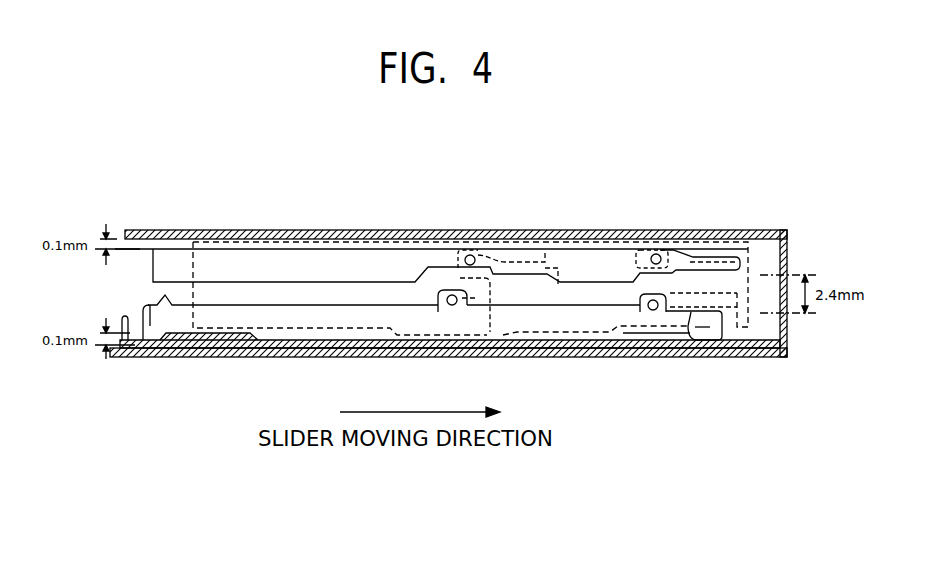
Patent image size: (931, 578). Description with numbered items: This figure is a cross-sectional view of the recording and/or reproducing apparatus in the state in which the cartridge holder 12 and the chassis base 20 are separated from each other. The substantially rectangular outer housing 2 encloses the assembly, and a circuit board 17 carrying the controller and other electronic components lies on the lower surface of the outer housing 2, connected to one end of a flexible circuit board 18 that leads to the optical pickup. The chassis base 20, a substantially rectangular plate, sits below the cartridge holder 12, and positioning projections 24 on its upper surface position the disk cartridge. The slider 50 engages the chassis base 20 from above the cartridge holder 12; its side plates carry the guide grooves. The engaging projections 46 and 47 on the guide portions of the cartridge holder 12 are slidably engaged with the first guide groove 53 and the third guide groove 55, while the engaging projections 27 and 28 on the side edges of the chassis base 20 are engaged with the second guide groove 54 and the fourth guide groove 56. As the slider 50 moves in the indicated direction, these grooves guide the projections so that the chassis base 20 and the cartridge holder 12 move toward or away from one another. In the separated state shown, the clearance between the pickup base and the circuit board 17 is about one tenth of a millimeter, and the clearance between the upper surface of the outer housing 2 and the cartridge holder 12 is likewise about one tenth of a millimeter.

The outer housing 2 is at (448, 286).
The cartridge holder 12 is at (173, 260).
The slider 50 is at (317, 237).
The engaging projection 47 is at (470, 256).
The third guide groove 55 is at (527, 262).
The engaging projection 46 is at (656, 253).
The first guide groove 53 is at (694, 260).
The positioning projection 24 is at (157, 295).
The chassis base 20 is at (160, 328).
The flexible circuit board 18 is at (203, 346).
The engaging projection 28 is at (445, 312).
The fourth guide groove 56 is at (486, 345).
The circuit board 17 is at (617, 350).
The engaging projection 27 is at (652, 312).
The second guide groove 54 is at (690, 312).